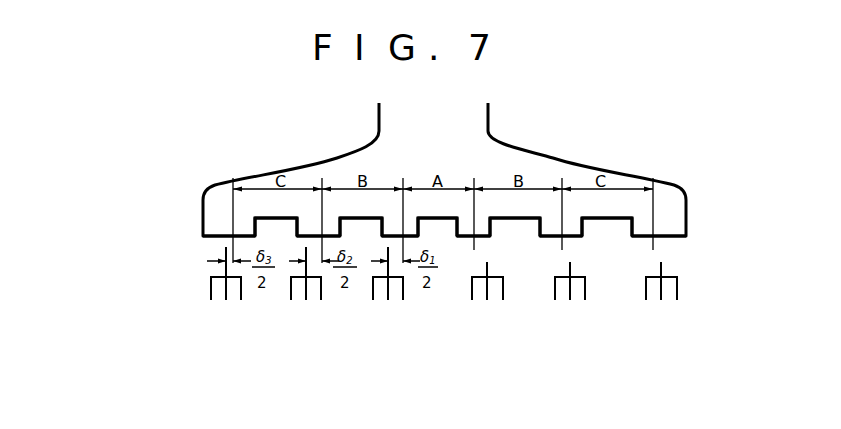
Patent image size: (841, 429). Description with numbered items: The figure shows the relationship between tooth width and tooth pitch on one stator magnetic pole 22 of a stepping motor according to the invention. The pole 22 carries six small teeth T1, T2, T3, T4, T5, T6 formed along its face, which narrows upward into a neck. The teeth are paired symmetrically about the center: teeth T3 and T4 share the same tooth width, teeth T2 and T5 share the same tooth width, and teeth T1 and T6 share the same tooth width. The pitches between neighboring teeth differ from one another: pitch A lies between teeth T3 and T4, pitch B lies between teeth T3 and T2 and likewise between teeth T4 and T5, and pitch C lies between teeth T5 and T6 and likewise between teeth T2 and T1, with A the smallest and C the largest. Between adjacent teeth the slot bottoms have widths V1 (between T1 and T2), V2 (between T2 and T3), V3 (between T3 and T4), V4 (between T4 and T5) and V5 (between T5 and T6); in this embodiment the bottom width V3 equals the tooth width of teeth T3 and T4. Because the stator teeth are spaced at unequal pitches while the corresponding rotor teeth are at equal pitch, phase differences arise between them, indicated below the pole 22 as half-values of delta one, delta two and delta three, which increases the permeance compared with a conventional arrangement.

The stator pole teeth 22 is at (686, 237).
The small tooth T1 is at (229, 222).
The small tooth T2 is at (318, 222).
The small tooth T3 is at (400, 222).
The small tooth T4 is at (473, 222).
The small tooth T5 is at (561, 222).
The small tooth T6 is at (659, 222).
The bottom width V1 is at (276, 231).
The bottom width V2 is at (361, 231).
The bottom width V3 is at (437, 231).
The bottom width V4 is at (515, 231).
The bottom width V5 is at (607, 231).